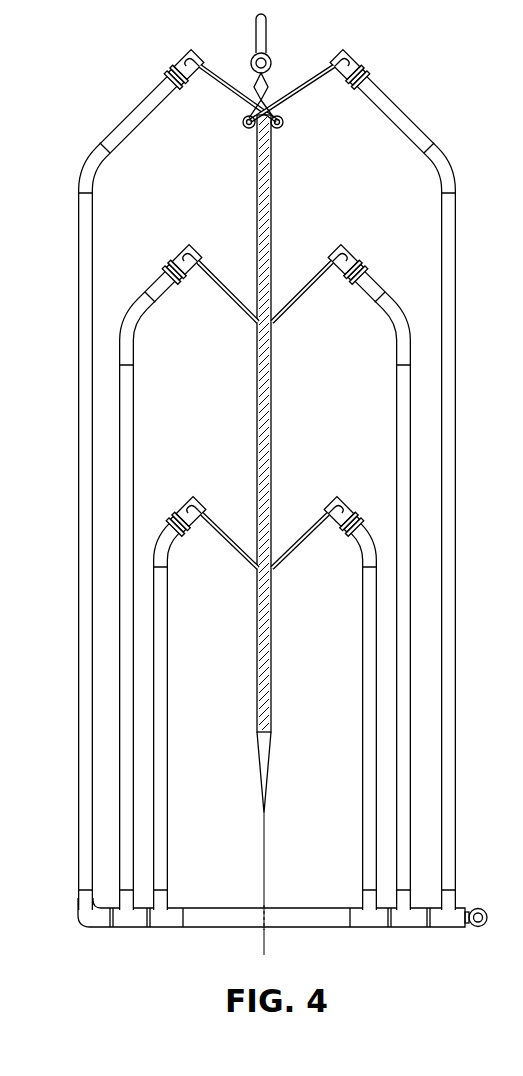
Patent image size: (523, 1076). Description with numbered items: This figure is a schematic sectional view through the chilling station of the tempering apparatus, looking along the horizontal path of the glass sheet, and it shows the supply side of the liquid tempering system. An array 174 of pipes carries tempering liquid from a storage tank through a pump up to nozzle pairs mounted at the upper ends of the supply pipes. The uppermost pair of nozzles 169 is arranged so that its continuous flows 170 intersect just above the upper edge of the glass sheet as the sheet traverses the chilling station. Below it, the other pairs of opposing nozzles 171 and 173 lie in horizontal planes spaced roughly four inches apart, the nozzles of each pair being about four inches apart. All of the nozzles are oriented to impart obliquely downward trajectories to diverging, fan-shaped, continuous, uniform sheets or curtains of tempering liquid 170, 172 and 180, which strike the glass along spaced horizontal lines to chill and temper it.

The uppermost pair of nozzles 169 is at (330, 42).
The continuous flows of tempering liquid 170 is at (222, 80).
The pair of opposing nozzles 171 is at (318, 258).
The continuous sheet of tempering liquid 172 is at (243, 336).
The pair of opposing nozzles 173 is at (322, 504).
The array of pipes 174 is at (150, 854).
The continuous sheet of tempering liquid 180 is at (240, 555).